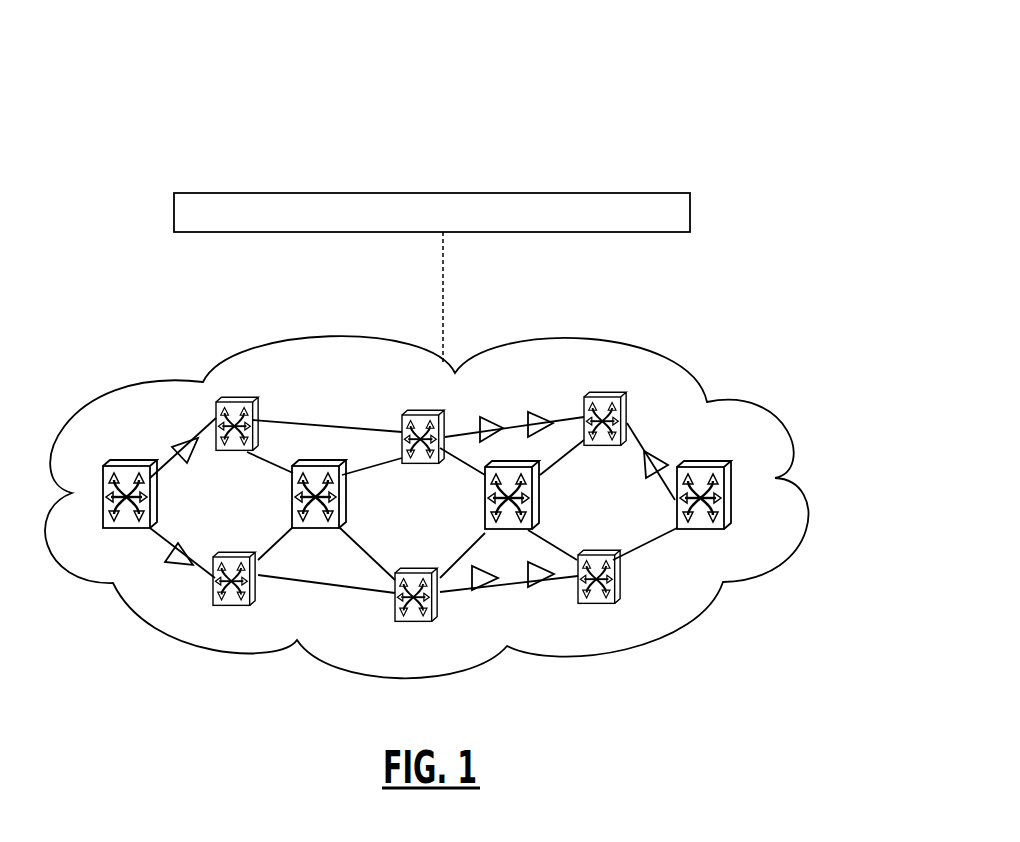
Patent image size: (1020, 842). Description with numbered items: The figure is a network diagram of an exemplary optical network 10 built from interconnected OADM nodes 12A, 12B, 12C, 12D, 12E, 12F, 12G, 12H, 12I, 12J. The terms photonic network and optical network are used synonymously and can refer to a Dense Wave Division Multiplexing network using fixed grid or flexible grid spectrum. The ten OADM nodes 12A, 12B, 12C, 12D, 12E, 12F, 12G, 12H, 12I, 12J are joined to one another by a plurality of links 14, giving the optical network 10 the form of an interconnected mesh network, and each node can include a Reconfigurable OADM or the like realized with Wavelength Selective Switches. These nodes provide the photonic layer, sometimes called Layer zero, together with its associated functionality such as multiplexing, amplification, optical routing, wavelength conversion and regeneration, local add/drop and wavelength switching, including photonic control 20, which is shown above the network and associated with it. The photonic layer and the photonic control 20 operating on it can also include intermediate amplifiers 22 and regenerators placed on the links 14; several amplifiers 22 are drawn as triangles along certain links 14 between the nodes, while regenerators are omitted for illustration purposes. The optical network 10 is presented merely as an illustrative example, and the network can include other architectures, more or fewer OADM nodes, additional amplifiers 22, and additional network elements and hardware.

The optical network 10 is at (477, 95).
The photonic control 20 is at (690, 209).
The OADM node 12A is at (137, 463).
The OADM node 12B is at (320, 530).
The OADM node 12C is at (507, 531).
The OADM node 12D is at (698, 531).
The OADM node 12E is at (245, 400).
The OADM node 12F is at (419, 464).
The OADM node 12G is at (600, 446).
The OADM node 12H is at (240, 555).
The OADM node 12I is at (422, 571).
The OADM node 12J is at (602, 553).
The link 14 is at (331, 426).
The intermediate amplifier 22 is at (485, 416).